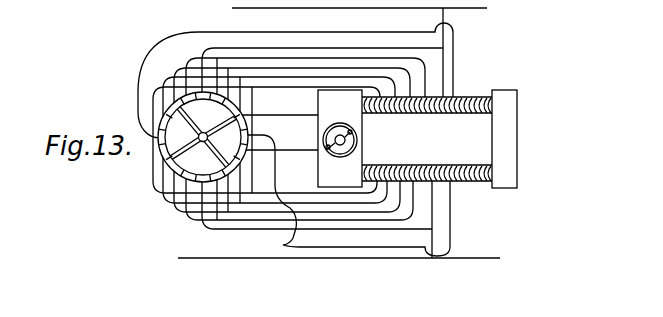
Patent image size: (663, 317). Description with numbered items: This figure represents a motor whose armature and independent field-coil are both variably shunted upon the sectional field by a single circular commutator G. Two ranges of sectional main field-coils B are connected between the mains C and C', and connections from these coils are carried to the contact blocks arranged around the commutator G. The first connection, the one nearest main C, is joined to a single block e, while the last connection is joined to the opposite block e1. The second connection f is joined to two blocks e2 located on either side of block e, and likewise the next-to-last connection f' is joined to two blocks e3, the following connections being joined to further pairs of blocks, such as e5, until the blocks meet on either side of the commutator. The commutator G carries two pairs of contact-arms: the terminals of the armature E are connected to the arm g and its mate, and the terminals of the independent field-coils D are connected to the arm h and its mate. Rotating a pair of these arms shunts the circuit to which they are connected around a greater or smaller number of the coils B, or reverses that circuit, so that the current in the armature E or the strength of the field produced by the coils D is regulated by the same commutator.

The main C is at (366, 49).
The main C' is at (347, 223).
The sectional main field-coils B is at (427, 139).
The independent field-coils D is at (492, 140).
The armature E is at (340, 138).
The circular commutator G is at (330, 185).
The second connection f is at (311, 138).
The next-to-last connection f' is at (305, 202).
The contact-arm g is at (203, 137).
The contact-arm h is at (204, 144).
The contact block e is at (203, 137).
The contact block e1 is at (295, 126).
The contact blocks e2 is at (209, 106).
The contact blocks e3 is at (202, 167).
The contact segment e5 is at (236, 186).